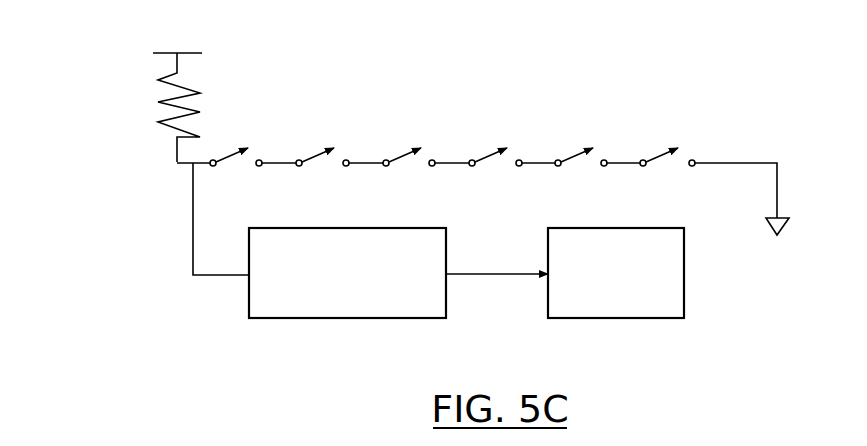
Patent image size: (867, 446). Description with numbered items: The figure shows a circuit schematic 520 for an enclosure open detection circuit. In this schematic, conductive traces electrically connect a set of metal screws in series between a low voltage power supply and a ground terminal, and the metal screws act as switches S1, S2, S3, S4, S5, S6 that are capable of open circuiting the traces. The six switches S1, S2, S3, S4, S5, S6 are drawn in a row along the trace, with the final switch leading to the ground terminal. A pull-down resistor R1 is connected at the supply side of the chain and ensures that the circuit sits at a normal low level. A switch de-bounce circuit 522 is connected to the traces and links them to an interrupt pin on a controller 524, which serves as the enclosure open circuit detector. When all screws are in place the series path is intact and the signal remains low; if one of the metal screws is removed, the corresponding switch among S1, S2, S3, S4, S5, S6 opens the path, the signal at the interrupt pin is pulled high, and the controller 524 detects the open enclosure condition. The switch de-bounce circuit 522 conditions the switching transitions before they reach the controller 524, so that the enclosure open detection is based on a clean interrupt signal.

The circuit schematic 520 is at (423, 145).
The switch de-bounce circuit 522 is at (353, 322).
The controller 524 is at (613, 322).
The pull-down resistor R1 is at (155, 84).
The switch S1 is at (229, 146).
The switch S2 is at (295, 146).
The switch S3 is at (382, 146).
The switch S4 is at (468, 146).
The switch S5 is at (554, 146).
The switch S6 is at (639, 146).